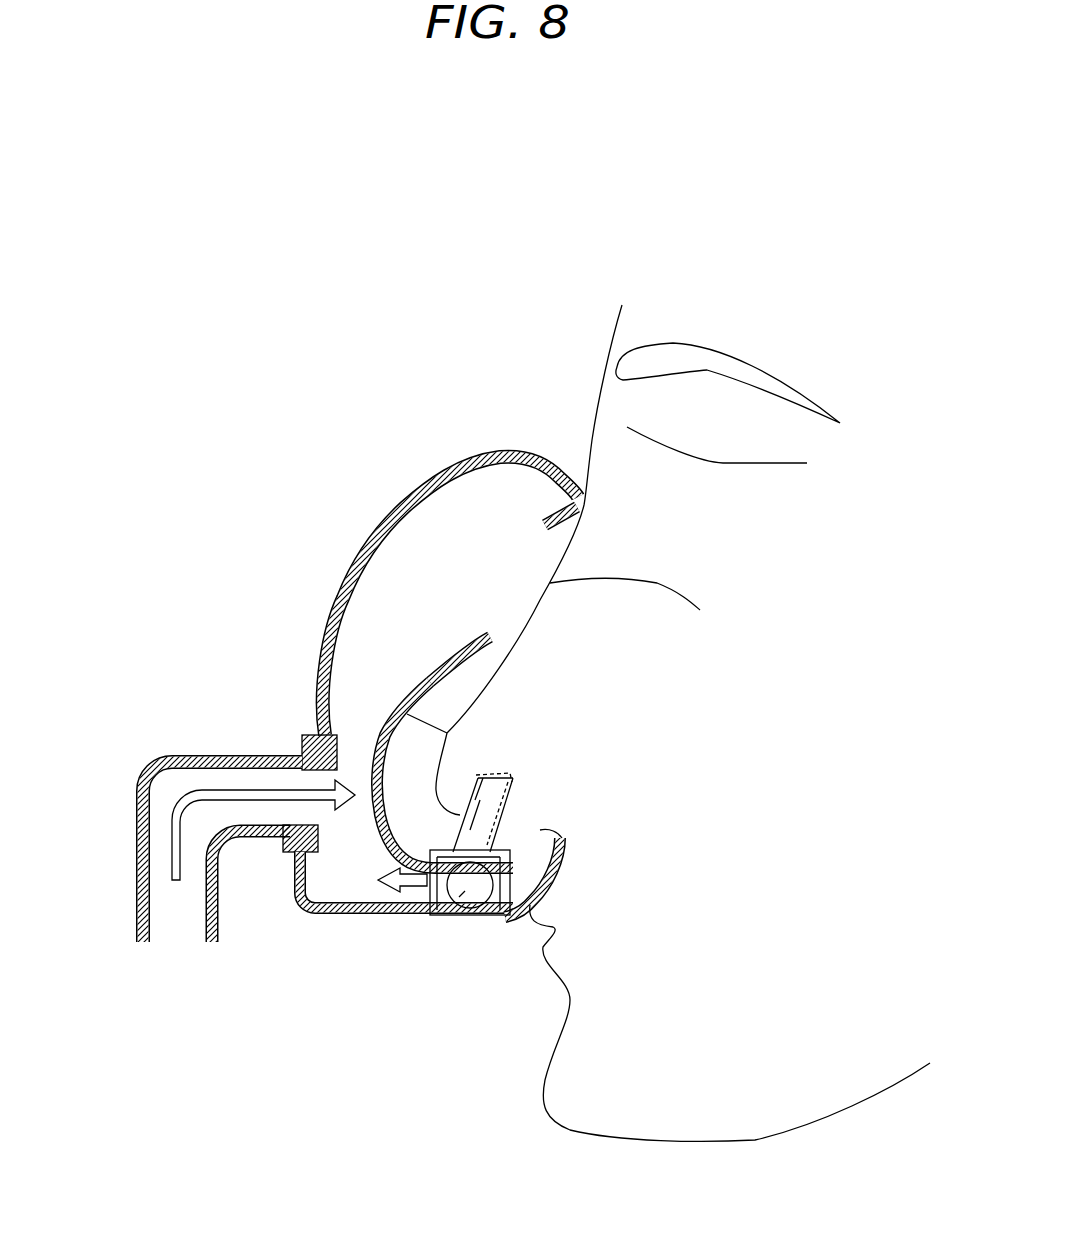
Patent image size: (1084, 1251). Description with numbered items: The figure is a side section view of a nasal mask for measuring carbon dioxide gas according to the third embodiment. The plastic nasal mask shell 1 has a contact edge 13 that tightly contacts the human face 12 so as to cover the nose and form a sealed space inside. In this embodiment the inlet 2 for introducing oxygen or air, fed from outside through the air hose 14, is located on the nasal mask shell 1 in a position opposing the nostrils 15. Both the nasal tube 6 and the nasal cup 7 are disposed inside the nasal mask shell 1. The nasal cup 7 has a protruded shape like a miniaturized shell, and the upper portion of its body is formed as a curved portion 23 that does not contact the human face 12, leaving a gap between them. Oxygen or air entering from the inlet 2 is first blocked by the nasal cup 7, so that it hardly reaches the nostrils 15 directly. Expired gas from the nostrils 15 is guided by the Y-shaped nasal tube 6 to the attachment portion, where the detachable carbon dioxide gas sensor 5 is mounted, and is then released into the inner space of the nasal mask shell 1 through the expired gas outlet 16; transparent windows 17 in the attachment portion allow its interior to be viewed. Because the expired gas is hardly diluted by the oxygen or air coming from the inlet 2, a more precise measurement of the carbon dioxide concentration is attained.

The nasal mask shell 1 is at (415, 487).
The inlet 2 is at (297, 783).
The carbon dioxide gas sensor 5 is at (467, 927).
The nasal tube 6 is at (447, 817).
The nasal cup 7 is at (413, 690).
The human face 12 is at (553, 580).
The contact edge 13 is at (580, 472).
The air hose 14 is at (135, 847).
The nostrils 15 is at (507, 820).
The expired gas outlet 16 is at (402, 920).
The transparent windows 17 is at (437, 920).
The curved portion 23 is at (487, 637).